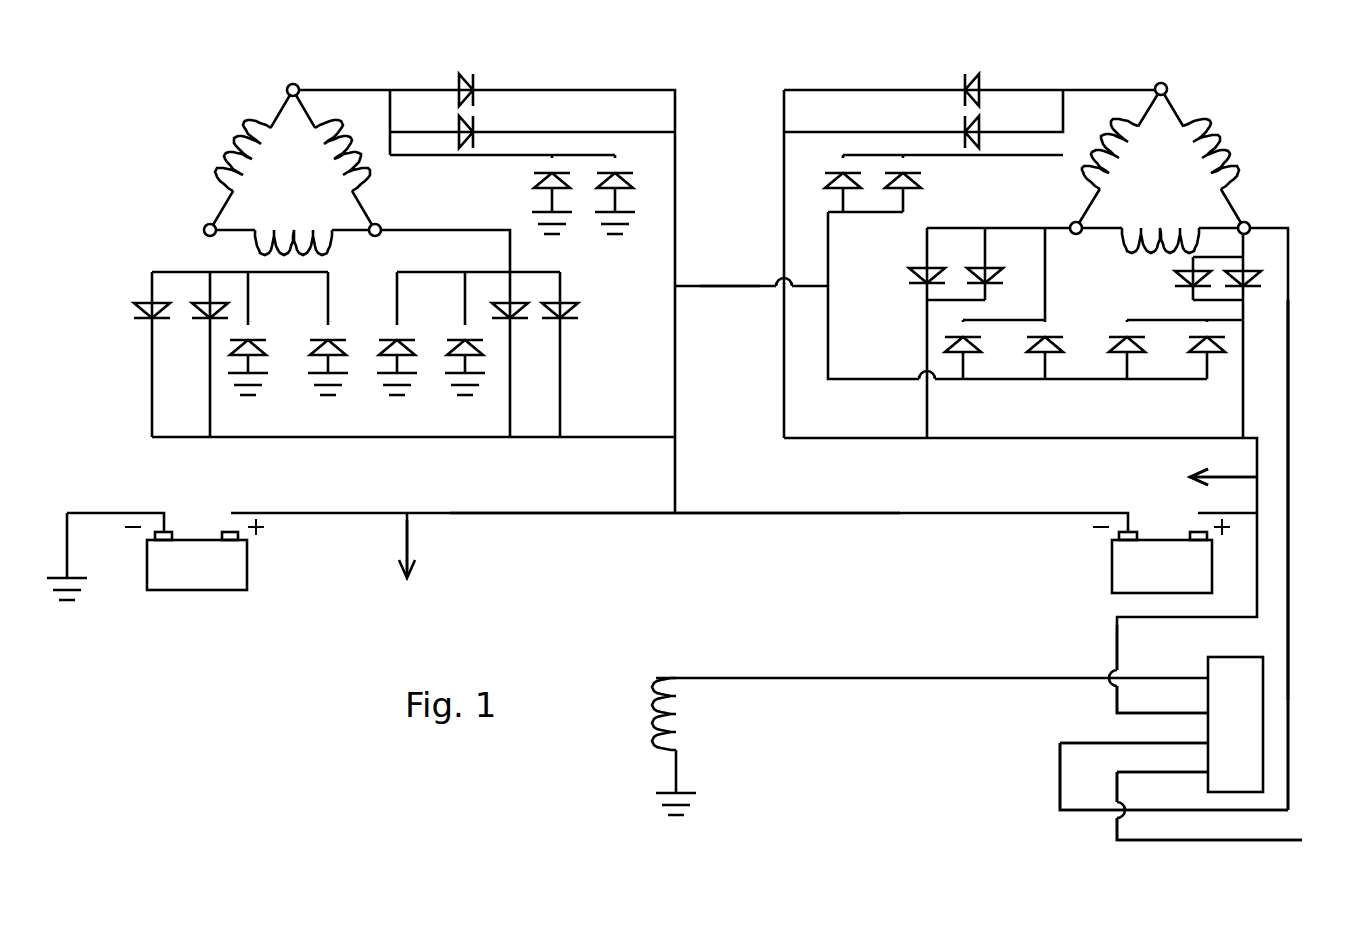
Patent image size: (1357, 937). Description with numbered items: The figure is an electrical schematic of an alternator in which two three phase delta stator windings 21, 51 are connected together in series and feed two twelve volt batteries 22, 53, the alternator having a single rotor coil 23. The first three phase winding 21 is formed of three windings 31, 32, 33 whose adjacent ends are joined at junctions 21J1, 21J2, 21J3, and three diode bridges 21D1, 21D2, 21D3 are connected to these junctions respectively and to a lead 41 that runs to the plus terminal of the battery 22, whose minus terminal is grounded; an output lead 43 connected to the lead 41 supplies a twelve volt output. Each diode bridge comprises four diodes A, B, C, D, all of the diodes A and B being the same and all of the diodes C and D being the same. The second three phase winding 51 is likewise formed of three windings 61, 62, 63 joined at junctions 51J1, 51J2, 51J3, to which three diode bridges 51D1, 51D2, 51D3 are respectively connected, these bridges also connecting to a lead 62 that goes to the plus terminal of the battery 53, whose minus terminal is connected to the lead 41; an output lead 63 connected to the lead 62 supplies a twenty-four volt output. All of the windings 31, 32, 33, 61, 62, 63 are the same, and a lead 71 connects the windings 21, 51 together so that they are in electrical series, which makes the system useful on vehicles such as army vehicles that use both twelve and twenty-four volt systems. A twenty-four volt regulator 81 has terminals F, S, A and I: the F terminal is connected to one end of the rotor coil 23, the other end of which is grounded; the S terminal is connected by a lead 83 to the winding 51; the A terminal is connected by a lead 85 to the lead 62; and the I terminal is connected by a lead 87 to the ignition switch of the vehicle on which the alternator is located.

The three phase delta stator winding 21 is at (147, 172).
The junction 21J1 is at (291, 83).
The junction 21J2 is at (382, 224).
The junction 21J3 is at (203, 229).
The winding 31 is at (366, 162).
The winding 32 is at (325, 256).
The winding 33 is at (238, 140).
The diode bridge 21D1 is at (538, 89).
The diode bridge 21D2 is at (566, 336).
The diode bridge 21D3 is at (146, 340).
The battery 22 is at (248, 580).
The rotor coil 23 is at (650, 722).
The lead 41 is at (600, 516).
The output lead 43 is at (400, 556).
The lead 71 is at (752, 290).
The three phase delta stator winding 51 is at (1293, 146).
The junction 51J1 is at (1159, 82).
The junction 51J2 is at (1250, 222).
The junction 51J3 is at (1071, 222).
The winding 61 is at (1207, 120).
The winding / lead 62 is at (1120, 252).
The winding / output lead 63 is at (1084, 168).
The diode bridge 51D1 is at (936, 84).
The diode bridge 51D2 is at (1200, 384).
The diode bridge 51D3 is at (924, 337).
The battery 53 is at (1110, 566).
The regulator 81 is at (1206, 668).
The lead 83 is at (1290, 704).
The lead 85 is at (1113, 636).
The lead 87 is at (1232, 845).
The diode A is at (460, 84).
The diode B is at (478, 127).
The diode C is at (535, 180).
The diode D is at (630, 176).